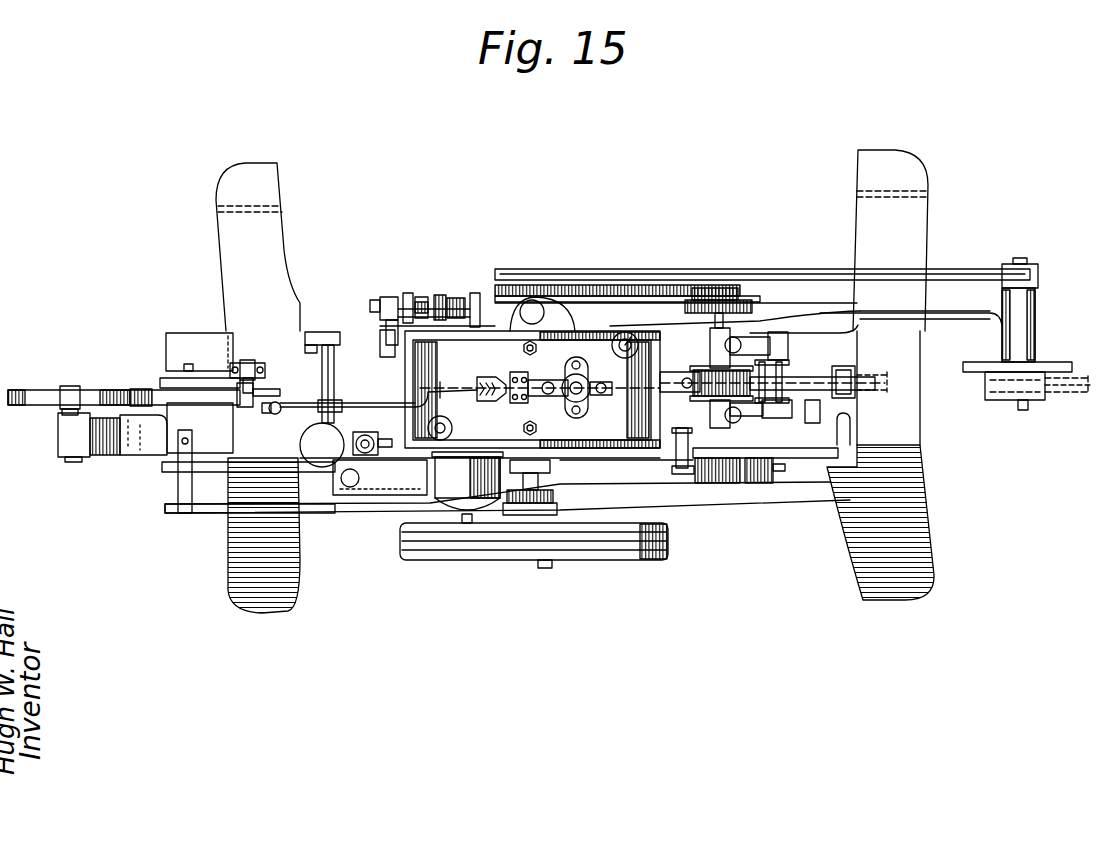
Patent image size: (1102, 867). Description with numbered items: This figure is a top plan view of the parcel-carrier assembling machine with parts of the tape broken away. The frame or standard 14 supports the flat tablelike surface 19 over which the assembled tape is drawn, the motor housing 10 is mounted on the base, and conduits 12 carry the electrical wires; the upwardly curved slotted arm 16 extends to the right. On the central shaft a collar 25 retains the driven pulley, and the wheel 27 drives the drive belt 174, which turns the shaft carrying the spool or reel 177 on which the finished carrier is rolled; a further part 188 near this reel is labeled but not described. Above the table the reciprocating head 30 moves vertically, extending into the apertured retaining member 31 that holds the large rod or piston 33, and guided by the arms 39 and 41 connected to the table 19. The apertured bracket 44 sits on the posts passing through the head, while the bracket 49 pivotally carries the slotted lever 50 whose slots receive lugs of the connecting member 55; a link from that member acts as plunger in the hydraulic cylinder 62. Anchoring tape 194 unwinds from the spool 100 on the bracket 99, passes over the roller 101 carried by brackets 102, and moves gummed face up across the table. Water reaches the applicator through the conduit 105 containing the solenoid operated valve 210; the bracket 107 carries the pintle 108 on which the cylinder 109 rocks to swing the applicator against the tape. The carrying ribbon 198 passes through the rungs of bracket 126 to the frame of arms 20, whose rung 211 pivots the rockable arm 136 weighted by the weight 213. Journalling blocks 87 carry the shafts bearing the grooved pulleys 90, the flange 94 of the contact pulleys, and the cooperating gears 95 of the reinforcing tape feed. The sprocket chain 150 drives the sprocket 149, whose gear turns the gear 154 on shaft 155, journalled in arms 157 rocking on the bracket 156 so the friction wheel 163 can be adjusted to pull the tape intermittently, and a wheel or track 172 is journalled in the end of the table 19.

The motor housing 10 is at (462, 486).
The conduits 12 is at (120, 450).
The frame or standard 14 is at (281, 229).
The upwardly curved slotted arm 16 is at (955, 348).
The tablelike surface 19 is at (833, 335).
The pair of arms 20 is at (318, 342).
The collar 25 is at (572, 561).
The wheel 27 is at (547, 569).
The reciprocating head 30 is at (612, 324).
The apertured retaining member 31 is at (561, 308).
The rod, piston or arm 33 is at (512, 330).
The arm or piston 39 is at (620, 340).
The arm or piston 41 is at (452, 428).
The apertured bracket 44 is at (497, 356).
The upwardly extending bracket 49 is at (538, 372).
The lever 50 is at (565, 397).
The bracket or connecting member 55 is at (601, 394).
The hydraulic cylinder 62 is at (582, 378).
The journalling arms or blocks 87 is at (388, 297).
The grooved pulley wheels 90 is at (420, 298).
The peripheral flange 94 is at (405, 295).
The cooperating gears 95 is at (438, 296).
The upwardly extending bracket or arm 99 is at (68, 387).
The spool 100 is at (99, 391).
The reel, spool or wheel 101 is at (160, 380).
The arms or brackets 102 is at (210, 366).
The conduit 105 is at (270, 403).
The upwardly extending bracket 107 is at (318, 444).
The pintle or shaft 108 is at (243, 360).
The pivotal element or cylinder 109 is at (250, 399).
The bracket 126 is at (180, 493).
The extensible and rockable arm 136 is at (392, 373).
The sprocket 149 is at (670, 302).
The sprocket chain 150 is at (598, 292).
The cooperating gear 154 is at (735, 297).
The shaft 155 is at (735, 327).
The bracket 156 is at (785, 402).
The arms 157 is at (752, 405).
The friction wheel 163 is at (690, 432).
The wheel or track 172 is at (850, 372).
The drive belt 174 is at (822, 258).
The spool or reel 177 is at (1058, 388).
The shaft end 188 is at (1078, 378).
The anchoring tape 194 is at (145, 391).
The carrying ribbon 198 is at (340, 382).
The solenoid operated valve 210 is at (367, 441).
The supporting rung 211 is at (316, 345).
The weight 213 is at (285, 393).